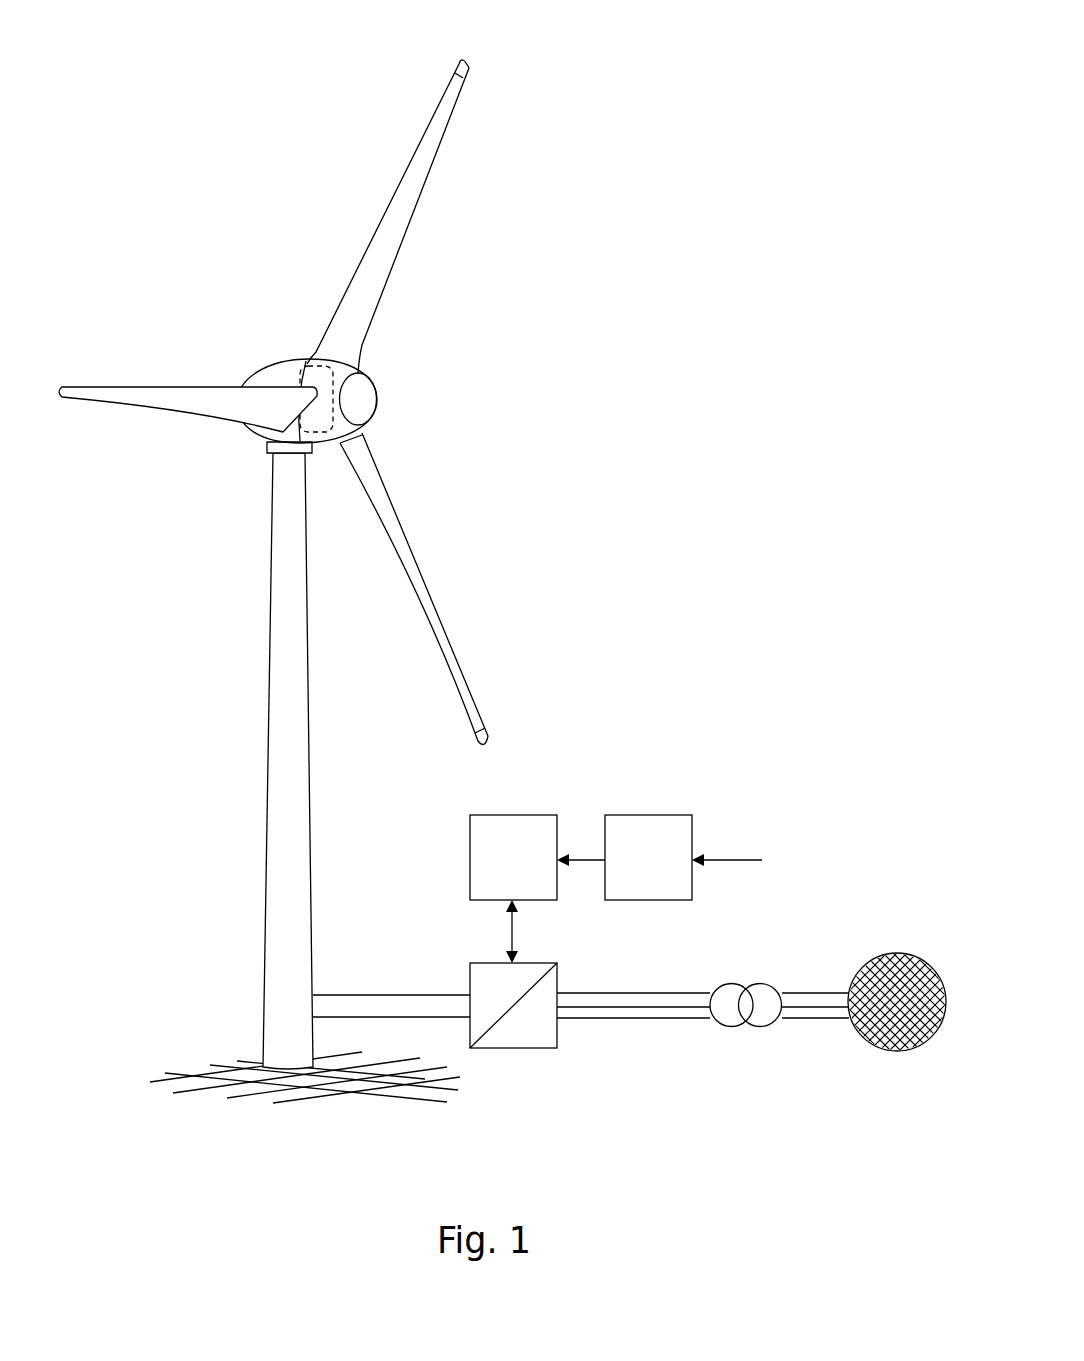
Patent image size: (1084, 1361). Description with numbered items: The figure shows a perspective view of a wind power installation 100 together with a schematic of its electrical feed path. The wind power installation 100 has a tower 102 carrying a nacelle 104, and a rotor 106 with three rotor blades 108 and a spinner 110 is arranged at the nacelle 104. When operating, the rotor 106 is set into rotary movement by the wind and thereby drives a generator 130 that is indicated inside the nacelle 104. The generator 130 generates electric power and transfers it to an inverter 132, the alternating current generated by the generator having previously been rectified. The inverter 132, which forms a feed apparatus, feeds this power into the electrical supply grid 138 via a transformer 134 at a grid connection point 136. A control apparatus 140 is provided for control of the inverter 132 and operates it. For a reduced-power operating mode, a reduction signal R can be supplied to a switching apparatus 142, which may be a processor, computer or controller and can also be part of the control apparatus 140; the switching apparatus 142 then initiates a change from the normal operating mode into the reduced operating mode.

The wind power installation 100 is at (228, 519).
The tower 102 is at (283, 862).
The nacelle 104 is at (290, 370).
The rotor 106 is at (450, 321).
The rotor blades 108 is at (122, 390).
The spinner 110 is at (362, 398).
The generator 130 is at (320, 372).
The inverter 132 is at (538, 1046).
The transformer 134 is at (745, 1040).
The grid connection point 136 is at (845, 1036).
The electrical supply grid 138 is at (888, 953).
The control apparatus 140 is at (533, 818).
The switching apparatus 142 is at (648, 818).